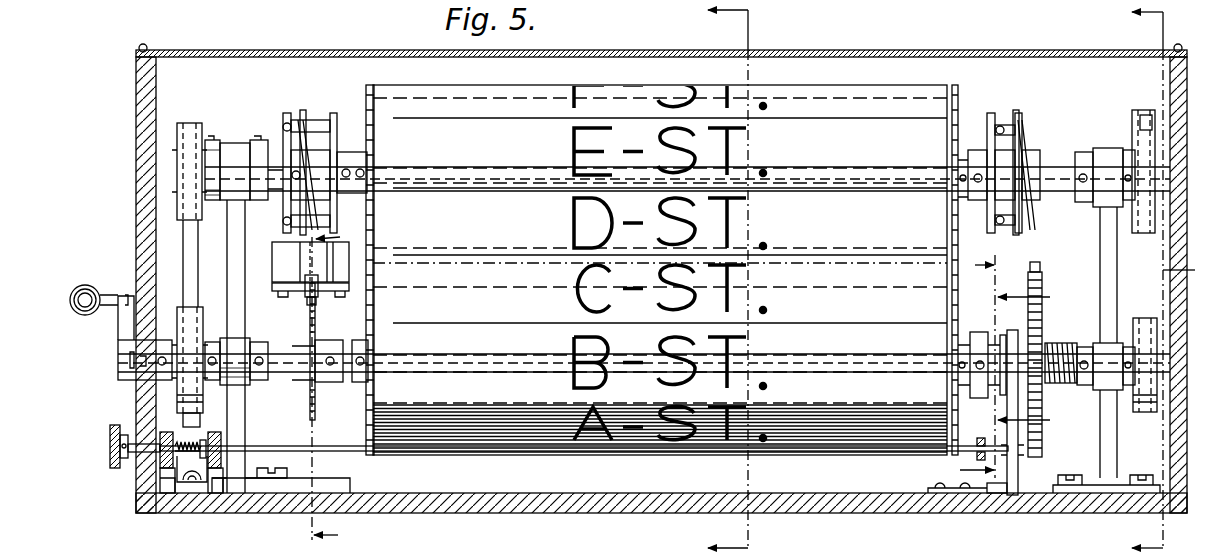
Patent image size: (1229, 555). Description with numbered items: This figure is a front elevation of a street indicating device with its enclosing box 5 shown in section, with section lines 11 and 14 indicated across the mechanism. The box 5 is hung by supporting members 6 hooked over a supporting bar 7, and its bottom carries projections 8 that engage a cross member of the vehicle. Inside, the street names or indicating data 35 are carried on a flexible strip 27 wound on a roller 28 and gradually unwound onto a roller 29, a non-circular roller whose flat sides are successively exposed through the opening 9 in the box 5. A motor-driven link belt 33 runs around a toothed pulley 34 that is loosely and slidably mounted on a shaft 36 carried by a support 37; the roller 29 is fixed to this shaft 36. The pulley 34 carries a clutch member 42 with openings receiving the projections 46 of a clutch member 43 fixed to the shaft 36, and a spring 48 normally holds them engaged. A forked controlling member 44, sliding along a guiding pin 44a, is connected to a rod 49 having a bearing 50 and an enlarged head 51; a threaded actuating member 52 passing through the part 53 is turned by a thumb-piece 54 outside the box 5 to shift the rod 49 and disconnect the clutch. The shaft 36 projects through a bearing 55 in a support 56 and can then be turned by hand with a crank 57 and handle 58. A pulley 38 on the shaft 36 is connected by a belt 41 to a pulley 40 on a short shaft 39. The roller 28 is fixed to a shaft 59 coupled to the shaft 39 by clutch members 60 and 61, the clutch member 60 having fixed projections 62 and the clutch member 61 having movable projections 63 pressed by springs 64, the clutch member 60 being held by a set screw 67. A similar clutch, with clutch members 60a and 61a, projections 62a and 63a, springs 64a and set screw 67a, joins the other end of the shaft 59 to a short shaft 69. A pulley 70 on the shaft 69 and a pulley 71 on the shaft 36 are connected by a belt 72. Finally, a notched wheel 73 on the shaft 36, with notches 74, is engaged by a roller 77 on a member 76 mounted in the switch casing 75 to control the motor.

The enclosing box 5 is at (606, 513).
The supporting members 6 is at (970, 368).
The supporting bar 7 is at (1032, 358).
The projections 8 is at (1133, 283).
The opening 9 is at (717, 282).
The section line 11 is at (339, 381).
The shaft 14 is at (906, 180).
The flexible strip 27 is at (805, 92).
The roller 28 is at (850, 102).
The roller 29 is at (814, 262).
The belt 33 is at (1042, 280).
The pulley 34 is at (1038, 260).
The indicating data 35 is at (575, 280).
The shaft 36 is at (290, 370).
The support 37 is at (1112, 422).
The pulley 38 is at (1133, 330).
The shaft 39 is at (1060, 166).
The pulley 40 is at (1133, 130).
The belt 41 is at (1192, 273).
The clutch member 42 is at (1003, 336).
The clutch member 43 is at (978, 335).
The forked controlling member 44 is at (1018, 470).
The guiding pin 44a is at (996, 495).
The projections 46 is at (993, 392).
The spring 48 is at (1060, 345).
The rod 49 is at (355, 452).
The bearing 50 is at (222, 458).
The enlarged head 51 is at (203, 460).
The threaded actuating member 52 is at (185, 460).
The part 53 is at (165, 460).
The thumb-piece 54 is at (110, 432).
The bearing 55 is at (230, 345).
The support 56 is at (230, 252).
The crank 57 is at (120, 325).
The handle 58 is at (80, 312).
The shaft 59 is at (814, 168).
The clutch member 60 is at (990, 113).
The clutch member 60a is at (334, 114).
The clutch member 61 is at (1018, 112).
The clutch member 61a is at (303, 112).
The projections 62 is at (1002, 124).
The projections 62a is at (324, 120).
The movable projections 63 is at (1012, 110).
The movable projections 63a is at (298, 150).
The springs 64 is at (1028, 160).
The springs 64a is at (298, 145).
The set screw 67 is at (980, 170).
The set screw 67a is at (347, 170).
The shaft 69 is at (276, 165).
The pulley 70 is at (180, 130).
The pulley 71 is at (183, 320).
The belt 72 is at (190, 235).
The notched wheel 73 is at (314, 387).
The notches 74 is at (316, 310).
The casing 75 is at (283, 254).
The member 76 is at (305, 283).
The roller 77 is at (308, 301).